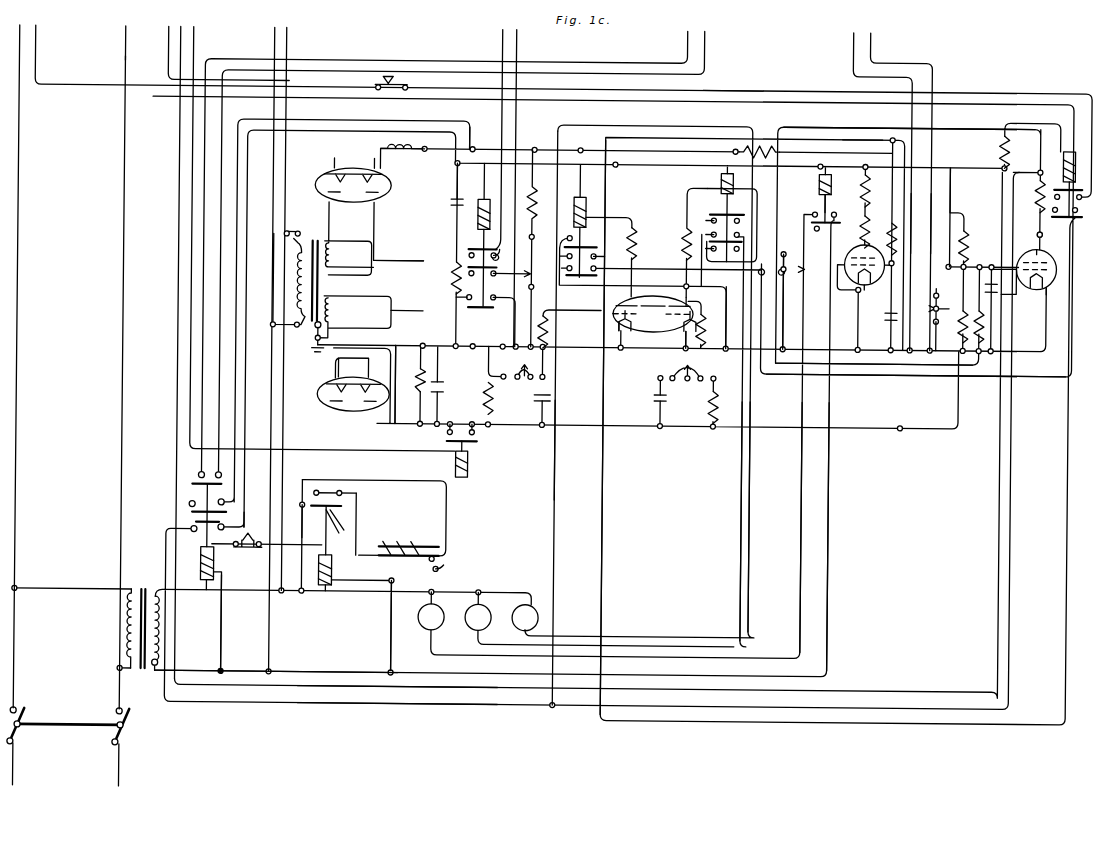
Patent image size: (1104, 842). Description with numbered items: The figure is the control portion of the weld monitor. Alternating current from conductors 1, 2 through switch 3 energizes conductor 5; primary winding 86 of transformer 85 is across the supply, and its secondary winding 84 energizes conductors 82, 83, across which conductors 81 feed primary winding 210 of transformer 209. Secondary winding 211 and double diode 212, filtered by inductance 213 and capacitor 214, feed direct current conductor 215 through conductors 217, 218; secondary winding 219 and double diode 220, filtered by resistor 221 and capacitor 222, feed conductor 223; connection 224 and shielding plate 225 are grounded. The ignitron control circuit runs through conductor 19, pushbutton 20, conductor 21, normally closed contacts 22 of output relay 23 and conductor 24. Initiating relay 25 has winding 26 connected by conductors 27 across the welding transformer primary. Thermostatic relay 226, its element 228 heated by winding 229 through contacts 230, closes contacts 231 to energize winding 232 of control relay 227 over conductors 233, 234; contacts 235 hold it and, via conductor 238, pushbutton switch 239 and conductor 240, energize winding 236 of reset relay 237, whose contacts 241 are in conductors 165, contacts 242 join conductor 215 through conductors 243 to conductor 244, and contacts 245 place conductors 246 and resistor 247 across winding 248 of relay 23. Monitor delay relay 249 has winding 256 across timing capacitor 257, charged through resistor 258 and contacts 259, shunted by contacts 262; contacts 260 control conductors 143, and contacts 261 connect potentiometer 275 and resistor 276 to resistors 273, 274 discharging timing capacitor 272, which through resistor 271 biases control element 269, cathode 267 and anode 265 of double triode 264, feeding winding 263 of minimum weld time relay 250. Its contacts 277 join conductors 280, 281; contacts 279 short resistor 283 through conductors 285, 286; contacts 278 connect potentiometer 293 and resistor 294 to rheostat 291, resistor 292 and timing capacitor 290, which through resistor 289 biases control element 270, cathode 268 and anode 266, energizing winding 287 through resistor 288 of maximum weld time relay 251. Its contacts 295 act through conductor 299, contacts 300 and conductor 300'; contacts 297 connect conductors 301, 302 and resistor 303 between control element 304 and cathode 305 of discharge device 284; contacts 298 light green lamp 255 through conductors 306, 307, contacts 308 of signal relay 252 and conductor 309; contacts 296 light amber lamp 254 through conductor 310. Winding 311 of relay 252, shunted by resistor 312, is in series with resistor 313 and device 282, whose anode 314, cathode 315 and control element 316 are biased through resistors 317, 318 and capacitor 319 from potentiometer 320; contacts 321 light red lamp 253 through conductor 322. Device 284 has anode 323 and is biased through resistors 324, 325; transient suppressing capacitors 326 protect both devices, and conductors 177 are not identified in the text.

The conductor 1 is at (28, 770).
The conductor 2 is at (116, 770).
The switch 3 is at (134, 726).
The conductor 5 is at (120, 64).
The conductor 19 is at (163, 45).
The control pushbutton 20 is at (407, 84).
The conductor 21 is at (777, 89).
The normally closed contacts 22 is at (1080, 205).
The output relay 23 is at (1050, 162).
The conductor 24 is at (33, 44).
The initiating relay 25 is at (470, 470).
The operating winding 26 is at (478, 452).
The conductors 27 is at (186, 36).
The conductors 81 is at (283, 38).
The conductor 82 is at (248, 588).
The conductor 83 is at (243, 664).
The secondary winding 84 is at (155, 678).
The transformer 85 is at (145, 590).
The primary winding 86 is at (128, 628).
The conductors 143 is at (505, 40).
The conductors 165 is at (696, 39).
The conductors 177 is at (864, 41).
The transformer 209 is at (310, 242).
The primary winding 210 is at (290, 289).
The secondary winding 211 is at (336, 253).
The double diode 212 is at (350, 162).
The inductance 213 is at (400, 160).
The capacitor 214 is at (399, 207).
The direct current conductor 215 is at (482, 140).
The conductor 217 is at (396, 258).
The conductor 218 is at (410, 315).
The secondary winding 219 is at (336, 308).
The double diode 220 is at (312, 408).
The resistor 221 is at (414, 392).
The capacitor 222 is at (434, 396).
The direct current conductor 223 is at (582, 442).
The connection 224 is at (400, 350).
The shielding plate 225 is at (311, 334).
The filament heating time relay 226 is at (424, 567).
The control relay 227 is at (324, 597).
The thermostatic switching element 228 is at (428, 542).
The winding 229 is at (392, 542).
The normally closed contacts 230 is at (336, 534).
The contacts 231 is at (446, 563).
The winding 232 is at (336, 573).
The conductor 233 is at (391, 638).
The conductor 234 is at (298, 490).
The normally open contacts 235 is at (345, 492).
The winding 236 is at (216, 566).
The reset relay 237 is at (205, 597).
The conductor 238 is at (300, 524).
The normally closed pushbutton switch 239 is at (248, 542).
The conductor 240 is at (222, 642).
The normally open contacts 241 is at (198, 478).
The normally open contacts 242 is at (192, 508).
The conductors 243 is at (238, 392).
The conductor 244 is at (466, 190).
The normally closed contacts 245 is at (188, 530).
The conductors 246 is at (360, 710).
The resistor 247 is at (1000, 147).
The operating winding 248 is at (1070, 140).
The monitor delay relay 249 is at (466, 250).
The minimum weld time relay 250 is at (583, 188).
The maximum weld time relay 251 is at (718, 176).
The signal relay 252 is at (824, 164).
The red signal light 253 is at (420, 628).
The amber signal light 254 is at (467, 628).
The green signal light 255 is at (514, 628).
The operating winding 256 is at (488, 190).
The timing capacitor 257 is at (450, 204).
The resistor 258 is at (450, 282).
The normally open contacts 259 is at (448, 433).
The normally closed contacts 260 is at (500, 250).
The normally closed contacts 261 is at (500, 274).
The normally open contacts 262 is at (462, 299).
The operating winding 263 is at (588, 205).
The double triode 264 is at (640, 228).
The anode 265 is at (614, 304).
The anode 266 is at (686, 296).
The cathode 267 is at (618, 333).
The cathode 268 is at (660, 350).
The control element 269 is at (612, 318).
The control element 270 is at (652, 305).
The current limiting resistor 271 is at (540, 305).
The timing capacitor 272 is at (542, 410).
The adjustable resistor 273 is at (514, 382).
The fixed resistor 274 is at (492, 409).
The potentiometer 275 is at (532, 240).
The fixed resistor 276 is at (536, 182).
The normally open contacts 277 is at (564, 236).
The normally open contacts 278 is at (609, 270).
The normally closed contacts 279 is at (609, 256).
The conductor 280 is at (783, 128).
The conductor 281 is at (860, 136).
The electric discharge device 282 is at (848, 252).
The resistor 283 is at (1030, 185).
The electric discharge device 284 is at (1021, 242).
The conductor 285 is at (555, 538).
The conductor 286 is at (605, 538).
The operating winding 287 is at (735, 180).
The resistor 288 is at (674, 271).
The current limiting resistor 289 is at (710, 305).
The timing capacitor 290 is at (652, 397).
The adjustable rheostat 291 is at (676, 384).
The fixed resistor 292 is at (710, 406).
The potentiometer 293 is at (784, 300).
The resistor 294 is at (768, 150).
The normally open contacts 295 is at (738, 196).
The normally open contacts 296 is at (706, 262).
The normally closed contacts 297 is at (738, 216).
The normally closed contacts 298 is at (738, 233).
The conductor 299 is at (959, 204).
The normally open contacts 300 is at (1053, 229).
The conductor 300' is at (873, 381).
The conductor 301 is at (727, 320).
The conductor 302 is at (932, 376).
The current limiting resistor 303 is at (980, 328).
The control element 304 is at (1010, 292).
The cathode 305 is at (1040, 300).
The conductor 306 is at (752, 545).
The conductor 307 is at (790, 252).
The normally closed contacts 308 is at (818, 235).
The conductor 309 is at (831, 582).
The conductor 310 is at (740, 556).
The operating winding 311 is at (817, 186).
The resistor 312 is at (857, 192).
The resistor 313 is at (885, 212).
The anode 314 is at (856, 225).
The cathode 315 is at (863, 285).
The control element 316 is at (837, 286).
The current limiting resistor 317 is at (912, 215).
The current limiting resistor 318 is at (920, 282).
The capacitor 319 is at (930, 250).
The potentiometer 320 is at (936, 328).
The normally open contacts 321 is at (811, 212).
The conductor 322 is at (800, 595).
The anode 323 is at (1044, 240).
The current limiting resistor 324 is at (966, 220).
The resistor 325 is at (958, 328).
The transient suppressing capacitor 326 is at (876, 314).